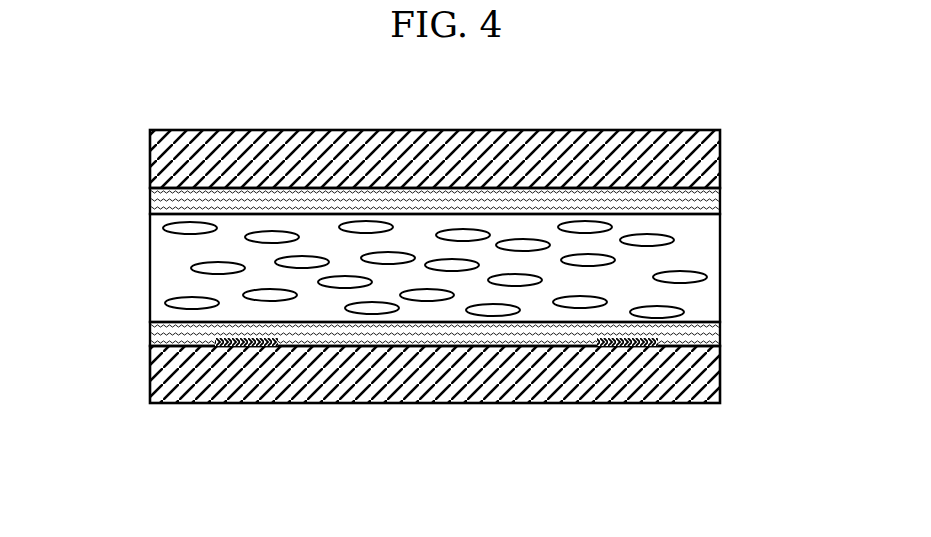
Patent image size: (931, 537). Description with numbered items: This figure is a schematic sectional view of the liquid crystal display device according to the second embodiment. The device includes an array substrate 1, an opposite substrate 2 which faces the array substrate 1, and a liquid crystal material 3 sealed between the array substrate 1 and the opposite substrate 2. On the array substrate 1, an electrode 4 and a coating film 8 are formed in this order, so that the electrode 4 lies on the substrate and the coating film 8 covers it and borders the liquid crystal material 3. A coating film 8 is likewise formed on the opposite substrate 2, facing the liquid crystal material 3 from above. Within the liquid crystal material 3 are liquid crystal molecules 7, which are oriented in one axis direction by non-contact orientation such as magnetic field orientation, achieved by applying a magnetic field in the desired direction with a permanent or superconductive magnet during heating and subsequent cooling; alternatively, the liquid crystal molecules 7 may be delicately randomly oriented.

The array substrate 1 is at (722, 369).
The opposite substrate 2 is at (722, 153).
The liquid crystal material 3 is at (439, 268).
The electrode 4 is at (276, 346).
The liquid crystal molecules 7 is at (170, 303).
The coating film 8 is at (722, 198).